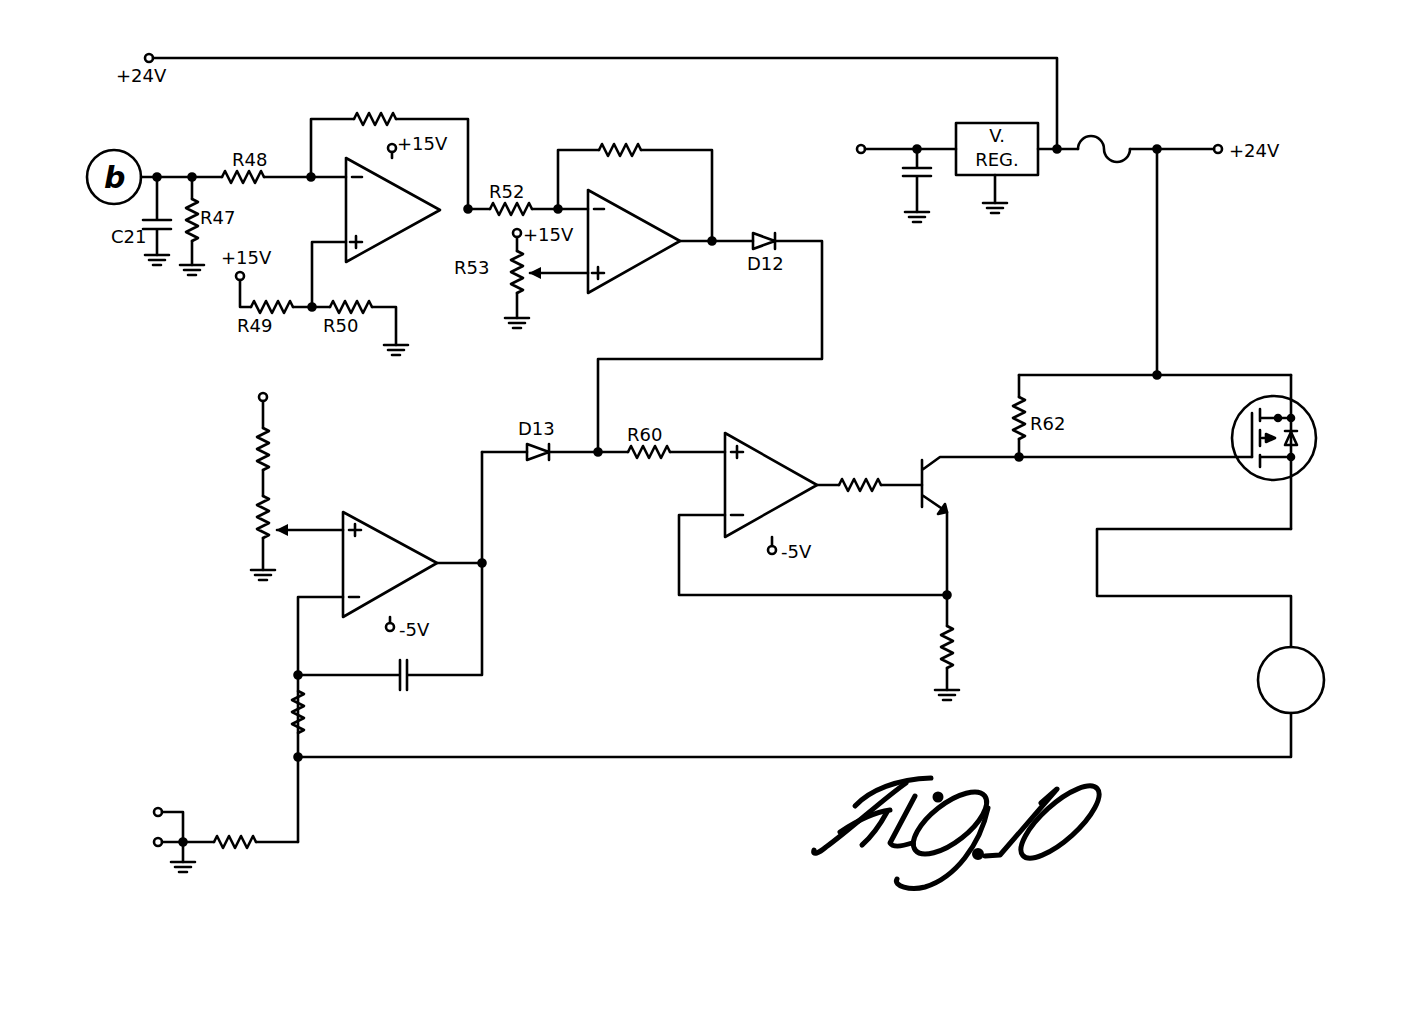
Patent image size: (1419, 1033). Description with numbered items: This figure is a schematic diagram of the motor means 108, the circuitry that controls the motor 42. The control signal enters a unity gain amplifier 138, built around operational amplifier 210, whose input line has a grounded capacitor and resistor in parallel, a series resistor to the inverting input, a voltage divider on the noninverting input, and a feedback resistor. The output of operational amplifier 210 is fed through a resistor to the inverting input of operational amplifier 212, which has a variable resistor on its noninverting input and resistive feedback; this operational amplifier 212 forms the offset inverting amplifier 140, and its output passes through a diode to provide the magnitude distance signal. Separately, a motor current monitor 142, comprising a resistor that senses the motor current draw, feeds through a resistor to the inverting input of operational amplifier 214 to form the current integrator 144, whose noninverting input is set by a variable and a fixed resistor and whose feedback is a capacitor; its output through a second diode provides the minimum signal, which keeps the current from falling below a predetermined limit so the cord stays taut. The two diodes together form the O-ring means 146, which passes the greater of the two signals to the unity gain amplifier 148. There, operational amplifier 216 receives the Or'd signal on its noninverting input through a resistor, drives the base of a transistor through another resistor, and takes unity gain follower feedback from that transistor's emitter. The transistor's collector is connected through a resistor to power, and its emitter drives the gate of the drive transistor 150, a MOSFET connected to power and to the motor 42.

The motor 42 is at (1309, 697).
The motor means 108 is at (1130, 134).
The unity gain amplifier 138 is at (433, 105).
The offset inverting amplifier 140 is at (668, 131).
The motor current monitor 142 is at (310, 838).
The current integrator 144 is at (346, 500).
The O-ring means 146 is at (601, 465).
The unity gain amplifier 148 is at (764, 440).
The drive transistor 150 is at (1309, 452).
The operational amplifier 210 is at (385, 232).
The operational amplifier 212 is at (638, 252).
The operational amplifier 214 is at (383, 542).
The operational amplifier 216 is at (775, 477).